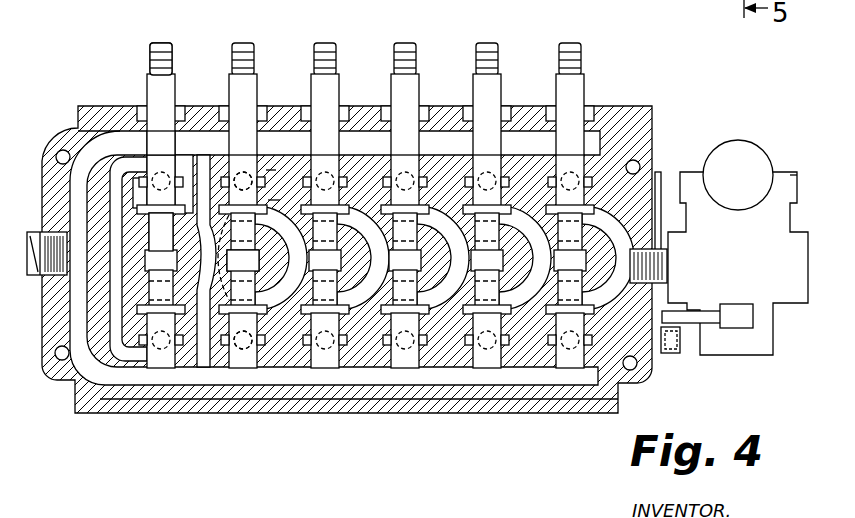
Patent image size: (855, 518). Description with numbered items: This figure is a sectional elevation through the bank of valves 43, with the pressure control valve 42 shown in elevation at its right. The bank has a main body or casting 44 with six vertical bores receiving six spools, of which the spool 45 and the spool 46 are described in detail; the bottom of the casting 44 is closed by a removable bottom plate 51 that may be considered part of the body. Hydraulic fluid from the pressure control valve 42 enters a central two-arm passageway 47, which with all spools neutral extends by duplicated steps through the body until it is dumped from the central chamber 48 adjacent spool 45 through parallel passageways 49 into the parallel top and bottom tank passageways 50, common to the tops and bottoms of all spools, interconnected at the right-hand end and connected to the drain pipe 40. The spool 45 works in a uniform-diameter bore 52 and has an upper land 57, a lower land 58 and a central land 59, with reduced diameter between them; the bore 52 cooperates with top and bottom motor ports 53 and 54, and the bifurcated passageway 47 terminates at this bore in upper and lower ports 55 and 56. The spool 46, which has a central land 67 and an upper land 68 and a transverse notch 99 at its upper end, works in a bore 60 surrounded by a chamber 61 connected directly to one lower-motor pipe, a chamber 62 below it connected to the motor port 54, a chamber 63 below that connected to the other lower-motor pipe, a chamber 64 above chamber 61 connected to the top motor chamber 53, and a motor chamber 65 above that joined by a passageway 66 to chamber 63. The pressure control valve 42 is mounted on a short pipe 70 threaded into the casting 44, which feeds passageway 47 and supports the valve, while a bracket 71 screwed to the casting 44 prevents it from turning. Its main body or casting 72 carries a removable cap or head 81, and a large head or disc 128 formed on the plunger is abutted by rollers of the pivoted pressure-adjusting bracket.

The drain conduit or pipe 40 is at (34, 278).
The pressure control valve 42 is at (791, 166).
The bank of valves 43 is at (640, 102).
The main body or casting 44 is at (527, 120).
The spool 45 is at (238, 90).
The spool 46 is at (158, 92).
The central two-arm passageway 47 is at (281, 298).
The central chamber 48 is at (298, 310).
The parallel passageways 49 is at (200, 160).
The top and bottom tank or drain passageways 50 is at (54, 124).
The removable bottom plate 51 is at (423, 0).
The bore 52 is at (271, 170).
The top motor chamber or port 53 is at (274, 200).
The bottom motor chamber or port 54 is at (263, 332).
The upper chamber or port 55 is at (216, 155).
The lower chamber or port 56 is at (213, 362).
The upper land or barrel 57 is at (242, 173).
The lower land or barrel 58 is at (242, 343).
The central or intermediate land or barrel 59 is at (243, 260).
The bore 60 is at (87, 167).
The chamber or port 61 is at (113, 265).
The chamber or port 62 is at (147, 333).
The chamber or port 63 is at (181, 340).
The chamber or port 64 is at (184, 195).
The motor chamber or port 65 is at (140, 180).
The passageway 66 is at (117, 192).
The central land or barrel 67 is at (161, 232).
The upper land or barrel 68 is at (161, 143).
The short pipe 70 is at (661, 178).
The bracket 71 is at (707, 326).
The main body or casting 72 is at (736, 265).
The removable cap or head 81 is at (785, 180).
The transverse notch 99 is at (160, 54).
The large head or disc 128 is at (735, 152).